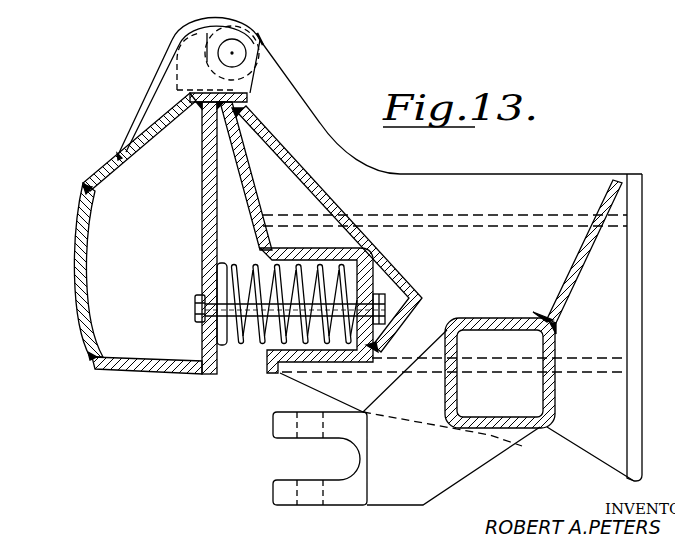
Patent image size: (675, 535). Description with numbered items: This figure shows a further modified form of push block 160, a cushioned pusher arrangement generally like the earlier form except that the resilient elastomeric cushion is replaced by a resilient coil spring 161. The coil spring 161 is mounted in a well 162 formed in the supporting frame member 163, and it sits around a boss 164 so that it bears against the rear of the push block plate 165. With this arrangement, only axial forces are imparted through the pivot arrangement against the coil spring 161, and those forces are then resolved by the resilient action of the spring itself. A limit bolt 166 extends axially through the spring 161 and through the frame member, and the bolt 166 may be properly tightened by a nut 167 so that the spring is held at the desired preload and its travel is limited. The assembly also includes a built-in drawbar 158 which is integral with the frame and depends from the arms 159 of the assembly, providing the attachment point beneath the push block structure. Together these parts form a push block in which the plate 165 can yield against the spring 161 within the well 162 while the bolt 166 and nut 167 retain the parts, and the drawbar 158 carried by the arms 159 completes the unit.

The drawbar 158 is at (318, 506).
The arms 159 is at (451, 474).
The push block 160 is at (74, 296).
The resilient coil spring 161 is at (251, 346).
The well 162 is at (385, 263).
The supporting frame member 163 is at (324, 261).
The boss 164 is at (220, 257).
The push block plate 165 is at (220, 276).
The limit bolt 166 is at (388, 312).
The nut 167 is at (197, 315).